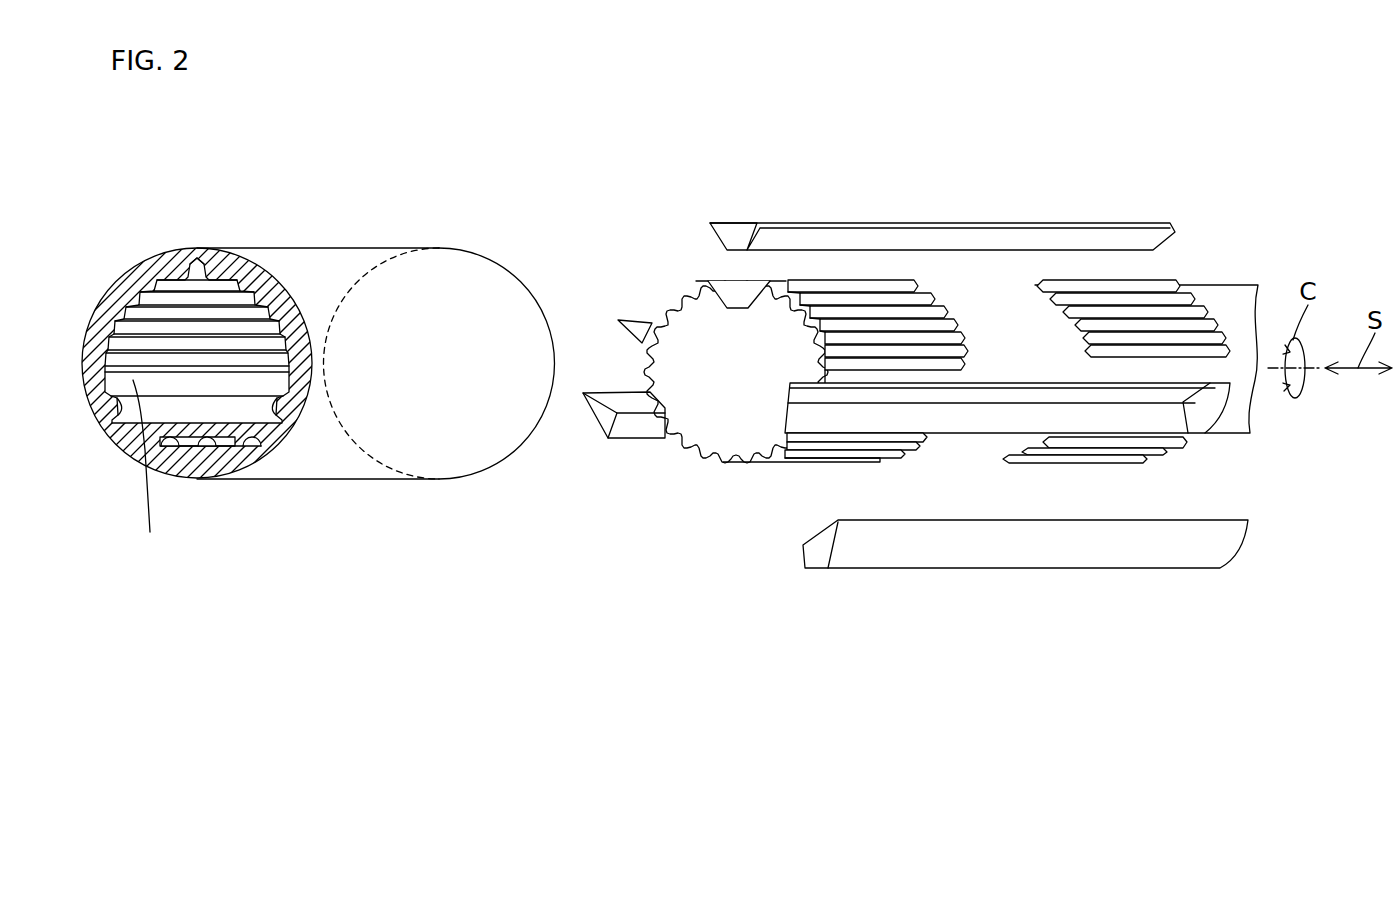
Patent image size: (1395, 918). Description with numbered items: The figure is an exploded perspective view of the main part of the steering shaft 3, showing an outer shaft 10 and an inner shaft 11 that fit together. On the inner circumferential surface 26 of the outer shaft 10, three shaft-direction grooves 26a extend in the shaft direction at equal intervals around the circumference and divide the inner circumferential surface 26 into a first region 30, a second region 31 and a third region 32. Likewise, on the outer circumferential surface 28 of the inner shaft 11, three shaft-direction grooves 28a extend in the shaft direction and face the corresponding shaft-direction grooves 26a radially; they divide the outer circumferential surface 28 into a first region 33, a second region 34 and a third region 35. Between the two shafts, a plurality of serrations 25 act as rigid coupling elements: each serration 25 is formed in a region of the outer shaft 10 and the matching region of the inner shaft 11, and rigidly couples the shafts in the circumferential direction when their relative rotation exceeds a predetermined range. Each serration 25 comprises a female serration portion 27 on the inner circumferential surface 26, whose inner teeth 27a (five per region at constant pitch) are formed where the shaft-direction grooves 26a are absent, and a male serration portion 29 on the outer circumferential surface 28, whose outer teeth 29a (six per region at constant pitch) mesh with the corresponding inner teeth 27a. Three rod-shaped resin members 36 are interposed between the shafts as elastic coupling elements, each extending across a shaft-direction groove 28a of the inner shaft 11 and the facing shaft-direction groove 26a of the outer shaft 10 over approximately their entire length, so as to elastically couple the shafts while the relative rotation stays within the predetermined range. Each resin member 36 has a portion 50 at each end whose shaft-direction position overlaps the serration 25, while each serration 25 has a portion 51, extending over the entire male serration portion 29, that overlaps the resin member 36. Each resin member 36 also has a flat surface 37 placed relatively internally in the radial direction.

The steering shaft 3 is at (762, 140).
The outer shaft 10 is at (325, 258).
The inner shaft 11 is at (1227, 300).
The serration 25 is at (677, 324).
The inner circumferential surface 26 is at (185, 283).
The shaft-direction groove 26a is at (206, 264).
The female serration portion 27 is at (172, 446).
The inner tooth 27a is at (207, 448).
The outer circumferential surface 28 is at (997, 445).
The shaft-direction groove 28a is at (735, 300).
The male serration portion 29 is at (740, 462).
The outer tooth 29a is at (618, 320).
The first region 30 is at (290, 398).
The second region 31 is at (252, 446).
The third region 32 is at (149, 471).
The first region 33 is at (790, 303).
The second region 34 is at (718, 460).
The third region 35 is at (690, 298).
The resin member 36 is at (880, 228).
The flat surface 37 is at (815, 246).
The portion 50 is at (975, 523).
The portion 51 is at (880, 476).